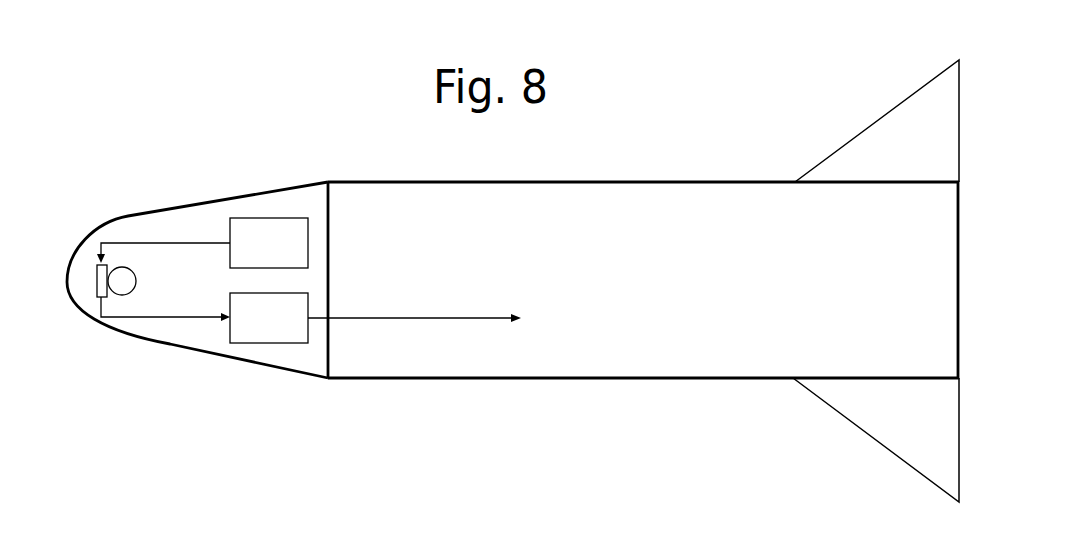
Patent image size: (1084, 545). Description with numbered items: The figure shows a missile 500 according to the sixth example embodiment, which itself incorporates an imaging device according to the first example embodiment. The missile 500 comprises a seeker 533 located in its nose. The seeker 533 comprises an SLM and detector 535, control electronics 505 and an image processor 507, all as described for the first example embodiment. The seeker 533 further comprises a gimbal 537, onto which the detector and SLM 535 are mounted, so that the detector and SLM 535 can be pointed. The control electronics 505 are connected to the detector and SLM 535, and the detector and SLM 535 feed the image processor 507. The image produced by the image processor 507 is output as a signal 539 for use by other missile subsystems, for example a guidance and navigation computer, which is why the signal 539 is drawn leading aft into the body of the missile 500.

The missile 500 is at (106, 96).
The seeker 533 is at (290, 200).
The control electronics 505 is at (252, 230).
The image processor 507 is at (270, 332).
The SLM and detector 535 is at (100, 280).
The gimbal 537 is at (128, 287).
The signal 539 is at (422, 320).